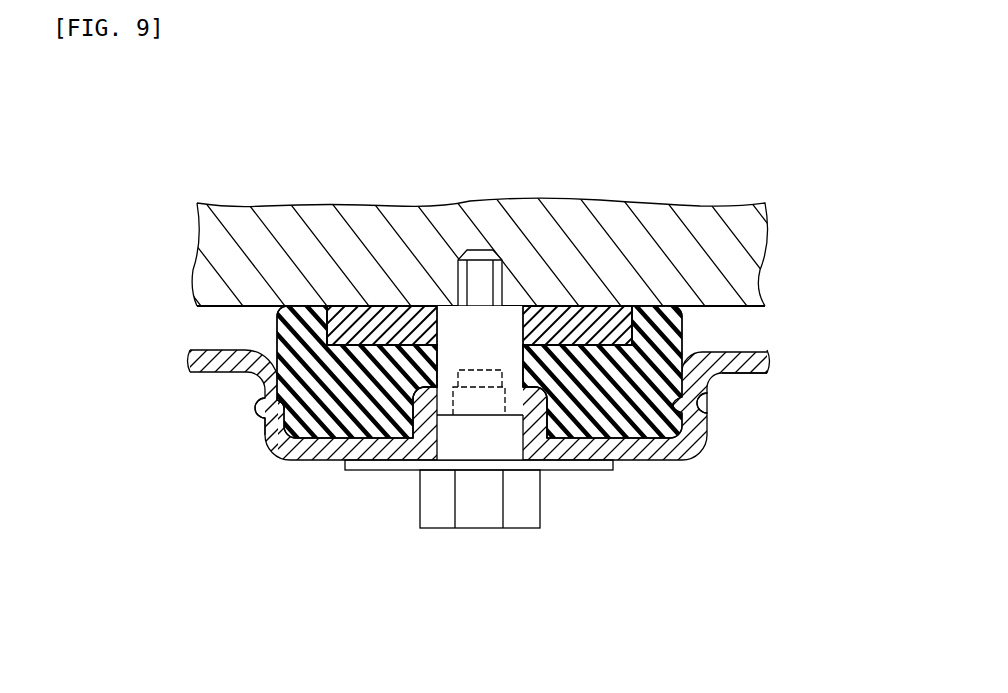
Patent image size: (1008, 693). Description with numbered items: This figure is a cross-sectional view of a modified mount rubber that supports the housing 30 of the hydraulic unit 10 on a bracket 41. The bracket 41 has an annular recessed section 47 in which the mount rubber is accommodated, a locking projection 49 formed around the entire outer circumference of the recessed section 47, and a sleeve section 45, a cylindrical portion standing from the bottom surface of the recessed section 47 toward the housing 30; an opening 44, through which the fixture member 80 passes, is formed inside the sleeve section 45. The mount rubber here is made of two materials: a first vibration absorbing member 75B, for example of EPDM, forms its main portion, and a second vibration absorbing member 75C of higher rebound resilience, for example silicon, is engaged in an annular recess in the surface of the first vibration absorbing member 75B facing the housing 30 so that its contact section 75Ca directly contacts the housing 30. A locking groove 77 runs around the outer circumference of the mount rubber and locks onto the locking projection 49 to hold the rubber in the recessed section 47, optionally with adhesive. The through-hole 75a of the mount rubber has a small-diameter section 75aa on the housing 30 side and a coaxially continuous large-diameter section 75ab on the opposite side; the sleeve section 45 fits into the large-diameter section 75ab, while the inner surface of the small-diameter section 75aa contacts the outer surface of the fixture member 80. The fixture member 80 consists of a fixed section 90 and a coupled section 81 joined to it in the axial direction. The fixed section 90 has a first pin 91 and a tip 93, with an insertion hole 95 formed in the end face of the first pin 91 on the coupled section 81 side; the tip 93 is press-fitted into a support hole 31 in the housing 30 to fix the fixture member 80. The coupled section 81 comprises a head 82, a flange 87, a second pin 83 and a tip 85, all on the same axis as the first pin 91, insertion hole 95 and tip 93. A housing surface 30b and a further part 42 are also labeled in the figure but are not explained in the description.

The hydraulic unit 10 is at (492, 253).
The housing 30 is at (740, 270).
The lower surface of panel 30b is at (698, 309).
The support hole 31 is at (510, 221).
The bracket 41 is at (762, 362).
The bracket 42 is at (459, 437).
The opening 44 is at (520, 413).
The sleeve section 45 is at (540, 413).
The recessed section 47 is at (345, 425).
The locking projection 49 is at (258, 412).
The through-hole 75a is at (453, 260).
The small-diameter section 75aa is at (439, 400).
The large-diameter section 75ab is at (352, 318).
The first vibration absorbing member 75B is at (468, 386).
The second vibration absorbing member 75C is at (347, 312).
The contact section 75Ca is at (603, 302).
The locking groove 77 is at (288, 407).
The fixture member 80 is at (506, 528).
The coupled section 81 is at (431, 528).
The head 82 is at (436, 518).
The second pin 83 is at (478, 443).
The tip 85 is at (472, 402).
The flange 87 is at (613, 467).
The fixed section 90 is at (525, 334).
The first pin 91 is at (510, 357).
The tip 93 is at (487, 282).
The insertion hole 95 is at (502, 400).